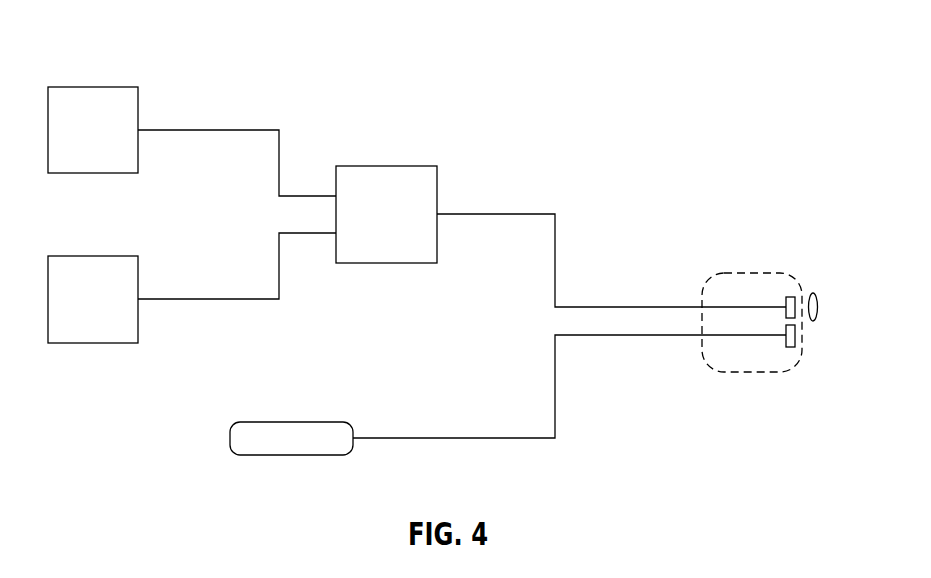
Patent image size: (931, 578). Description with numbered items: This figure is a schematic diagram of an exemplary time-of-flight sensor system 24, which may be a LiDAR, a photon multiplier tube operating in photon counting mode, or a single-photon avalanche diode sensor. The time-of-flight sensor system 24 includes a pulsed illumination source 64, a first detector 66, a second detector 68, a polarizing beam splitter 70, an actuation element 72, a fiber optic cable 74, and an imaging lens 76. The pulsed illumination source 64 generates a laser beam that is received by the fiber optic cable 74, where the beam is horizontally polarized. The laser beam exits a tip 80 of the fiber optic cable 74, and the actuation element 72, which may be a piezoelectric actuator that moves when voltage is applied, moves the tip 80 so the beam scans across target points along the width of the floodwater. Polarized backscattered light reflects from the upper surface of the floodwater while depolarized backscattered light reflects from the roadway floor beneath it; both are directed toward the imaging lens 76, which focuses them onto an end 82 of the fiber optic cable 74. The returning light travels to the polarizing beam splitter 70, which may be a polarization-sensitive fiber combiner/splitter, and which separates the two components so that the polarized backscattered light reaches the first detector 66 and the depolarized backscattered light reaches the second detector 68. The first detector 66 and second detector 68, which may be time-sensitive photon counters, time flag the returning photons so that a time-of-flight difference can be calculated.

The time-of-flight sensor system 24 is at (700, 45).
The pulsed illumination source 64 is at (282, 420).
The first detector 66 is at (80, 143).
The second detector 68 is at (80, 312).
The polarizing beam splitter 70 is at (384, 152).
The actuation element 72 is at (743, 273).
The fiber optic cable 74 is at (220, 129).
The imaging lens 76 is at (817, 295).
The tip 80 is at (788, 348).
The end 82 is at (787, 295).